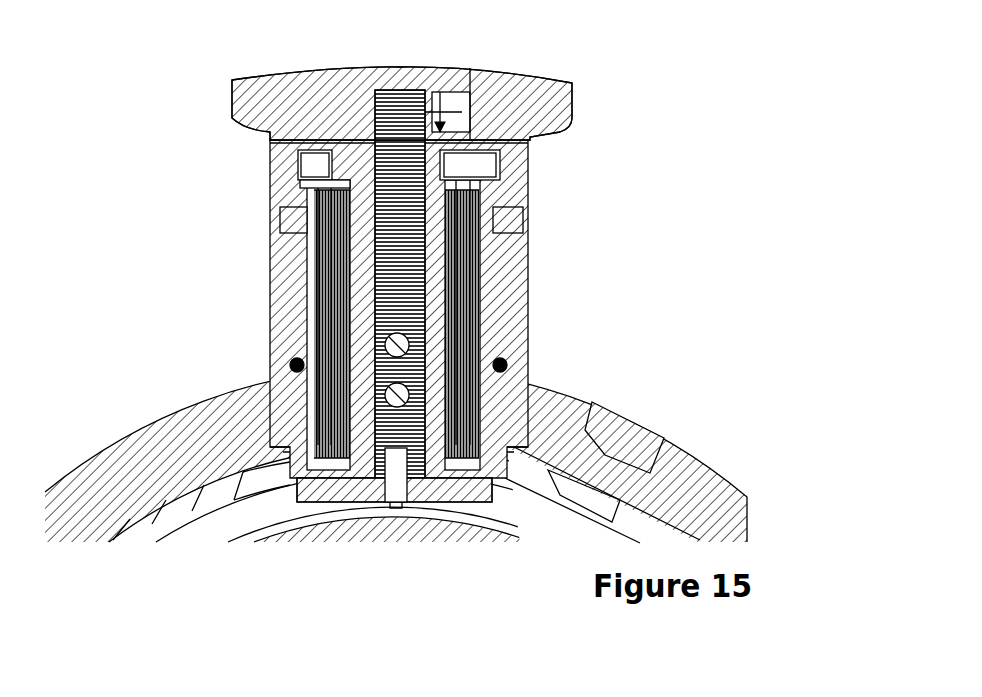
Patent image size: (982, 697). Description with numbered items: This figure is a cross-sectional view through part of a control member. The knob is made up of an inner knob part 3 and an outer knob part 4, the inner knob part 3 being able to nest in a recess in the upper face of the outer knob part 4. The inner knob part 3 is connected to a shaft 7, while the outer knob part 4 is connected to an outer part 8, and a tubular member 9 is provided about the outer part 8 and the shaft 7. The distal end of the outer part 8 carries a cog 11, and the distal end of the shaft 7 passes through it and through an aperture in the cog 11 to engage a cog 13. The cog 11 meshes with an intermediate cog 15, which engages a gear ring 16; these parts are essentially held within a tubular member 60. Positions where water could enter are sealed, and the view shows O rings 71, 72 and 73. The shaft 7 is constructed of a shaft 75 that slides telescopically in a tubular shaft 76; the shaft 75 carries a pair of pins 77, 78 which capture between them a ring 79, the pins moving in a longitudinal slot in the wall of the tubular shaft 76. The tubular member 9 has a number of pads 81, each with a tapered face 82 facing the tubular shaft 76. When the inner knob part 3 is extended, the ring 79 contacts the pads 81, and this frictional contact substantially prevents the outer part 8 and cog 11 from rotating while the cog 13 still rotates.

The inner knob part 3 is at (230, 76).
The outer knob part 4 is at (575, 80).
The shaft 7 is at (528, 270).
The outer part 8 is at (447, 338).
The tubular member 9 is at (590, 405).
The cog 11 is at (283, 453).
The cog 13 is at (287, 493).
The intermediate cog 15 is at (663, 517).
The gear ring 16 is at (192, 502).
The tubular member 60 is at (725, 476).
The O ring 71 is at (378, 388).
The O ring 72 is at (289, 363).
The O ring 73 is at (383, 472).
The shaft 75 is at (490, 315).
The tubular shaft 76 is at (515, 215).
The pin 77 is at (300, 222).
The pin 78 is at (383, 343).
The ring 79 is at (507, 364).
The pad 81 is at (300, 165).
The tapered face 82 is at (310, 195).